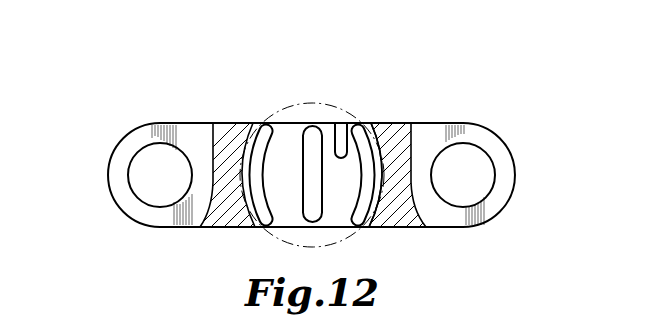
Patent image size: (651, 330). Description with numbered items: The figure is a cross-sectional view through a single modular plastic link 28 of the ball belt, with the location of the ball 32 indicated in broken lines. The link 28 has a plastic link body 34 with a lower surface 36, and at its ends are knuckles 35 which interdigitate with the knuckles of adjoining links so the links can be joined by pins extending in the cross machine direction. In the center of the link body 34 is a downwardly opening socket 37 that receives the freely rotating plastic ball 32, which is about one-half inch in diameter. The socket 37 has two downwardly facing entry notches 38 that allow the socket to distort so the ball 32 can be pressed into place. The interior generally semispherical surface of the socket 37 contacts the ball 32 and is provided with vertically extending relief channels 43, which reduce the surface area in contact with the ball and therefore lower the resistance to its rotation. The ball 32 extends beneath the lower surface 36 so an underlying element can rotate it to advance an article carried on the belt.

The modular plastic link 28 is at (518, 176).
The ball 32 is at (309, 100).
The link body 34 is at (443, 123).
The knuckles 35 is at (133, 222).
The lower surface 36 is at (226, 118).
The socket 37 is at (378, 205).
The entry notches 38 is at (342, 128).
The relief channels 43 is at (259, 164).